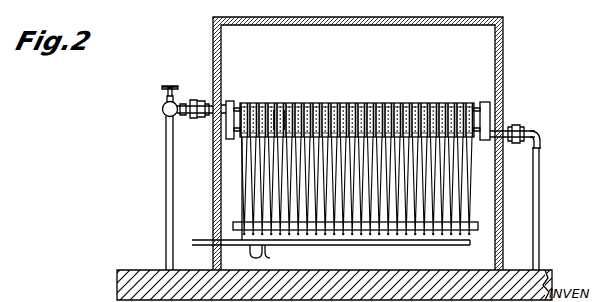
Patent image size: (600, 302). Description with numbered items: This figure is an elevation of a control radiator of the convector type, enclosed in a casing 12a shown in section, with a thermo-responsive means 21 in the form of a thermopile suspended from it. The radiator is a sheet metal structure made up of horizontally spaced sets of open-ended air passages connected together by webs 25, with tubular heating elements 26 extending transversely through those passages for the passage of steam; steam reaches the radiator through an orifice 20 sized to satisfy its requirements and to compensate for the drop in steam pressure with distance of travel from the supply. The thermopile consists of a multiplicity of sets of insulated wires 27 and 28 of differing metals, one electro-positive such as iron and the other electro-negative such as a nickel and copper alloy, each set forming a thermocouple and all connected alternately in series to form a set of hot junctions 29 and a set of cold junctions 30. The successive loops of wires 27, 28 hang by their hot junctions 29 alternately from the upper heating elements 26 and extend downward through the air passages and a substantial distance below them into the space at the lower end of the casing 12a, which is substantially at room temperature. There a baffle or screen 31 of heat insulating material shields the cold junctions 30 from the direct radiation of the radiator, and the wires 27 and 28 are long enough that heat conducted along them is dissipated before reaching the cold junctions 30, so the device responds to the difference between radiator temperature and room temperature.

The casing 12a is at (500, 63).
The orifice 20 is at (195, 100).
The thermo-responsive means 21 is at (470, 186).
The webs 25 is at (337, 100).
The tubular heating element 26 is at (236, 100).
The wires 27 is at (245, 183).
The wires 28 is at (250, 203).
The hot junctions 29 is at (286, 101).
The cold junctions 30 is at (270, 255).
The baffle or screen 31 is at (478, 224).